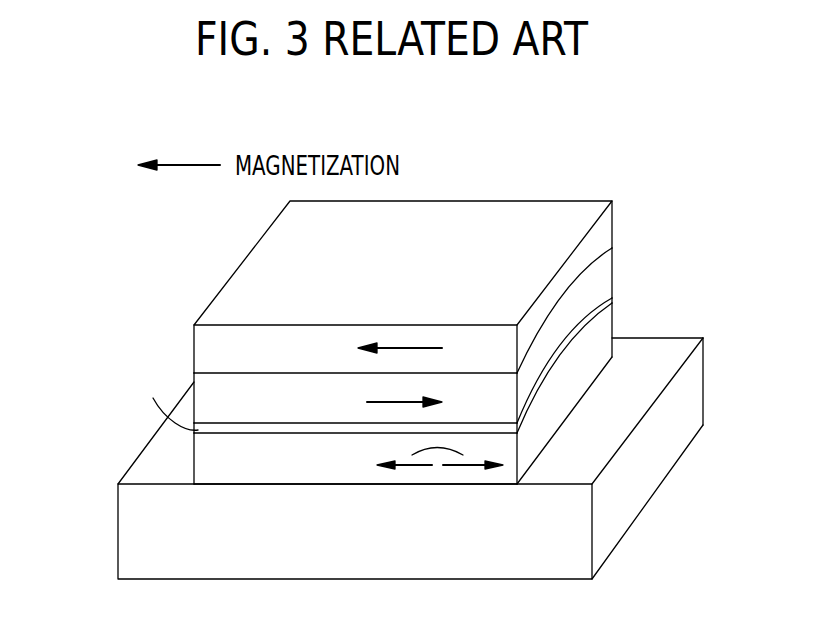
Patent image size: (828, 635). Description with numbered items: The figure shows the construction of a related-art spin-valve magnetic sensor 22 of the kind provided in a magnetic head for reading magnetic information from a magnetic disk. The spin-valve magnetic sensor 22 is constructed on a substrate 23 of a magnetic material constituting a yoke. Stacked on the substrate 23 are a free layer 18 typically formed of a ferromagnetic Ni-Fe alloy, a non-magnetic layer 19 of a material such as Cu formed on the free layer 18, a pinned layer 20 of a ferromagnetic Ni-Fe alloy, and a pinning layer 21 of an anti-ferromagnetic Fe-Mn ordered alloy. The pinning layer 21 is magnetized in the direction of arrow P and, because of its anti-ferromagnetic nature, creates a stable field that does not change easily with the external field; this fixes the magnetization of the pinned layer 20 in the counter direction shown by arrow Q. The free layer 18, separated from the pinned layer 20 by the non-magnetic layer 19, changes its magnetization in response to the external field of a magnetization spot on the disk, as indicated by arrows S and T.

The free layer 18 is at (606, 334).
The non-magnetic layer 19 is at (604, 304).
The pinned layer 20 is at (605, 266).
The pinning layer 21 is at (604, 224).
The spin-valve magnetic sensor 22 is at (500, 175).
The substrate 23 is at (630, 494).